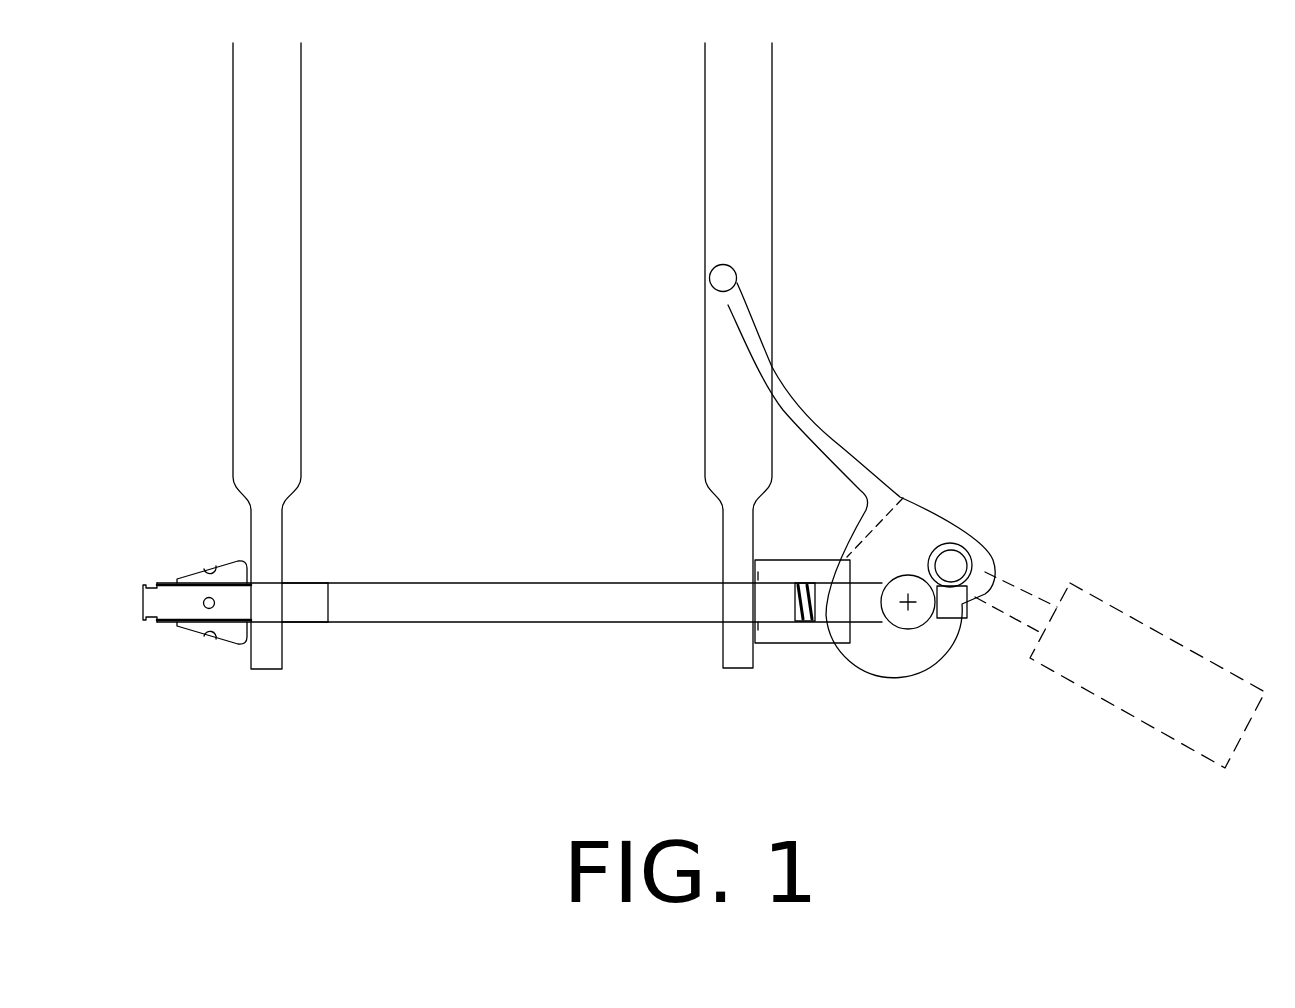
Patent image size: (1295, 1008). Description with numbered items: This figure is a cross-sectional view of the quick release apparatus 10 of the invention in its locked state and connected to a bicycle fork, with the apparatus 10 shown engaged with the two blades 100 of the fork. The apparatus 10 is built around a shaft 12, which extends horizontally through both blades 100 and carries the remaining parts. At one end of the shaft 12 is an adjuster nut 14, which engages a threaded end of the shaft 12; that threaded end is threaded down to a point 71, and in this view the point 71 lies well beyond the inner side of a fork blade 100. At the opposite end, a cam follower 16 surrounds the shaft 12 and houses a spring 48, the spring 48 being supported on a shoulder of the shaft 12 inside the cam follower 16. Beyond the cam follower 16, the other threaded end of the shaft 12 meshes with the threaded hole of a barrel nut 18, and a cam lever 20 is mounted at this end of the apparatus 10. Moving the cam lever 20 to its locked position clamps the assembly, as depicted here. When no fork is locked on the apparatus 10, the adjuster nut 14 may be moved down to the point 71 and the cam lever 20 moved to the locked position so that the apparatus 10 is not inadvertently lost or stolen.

The quick release apparatus 10 is at (940, 441).
The shaft 12 is at (565, 622).
The adjuster nut 14 is at (226, 644).
The cam follower 16 is at (803, 645).
The barrel nut 18 is at (927, 620).
The cam lever 20 is at (967, 522).
The spring 48 is at (797, 606).
The point 71 is at (328, 622).
The blades 100 is at (300, 251).